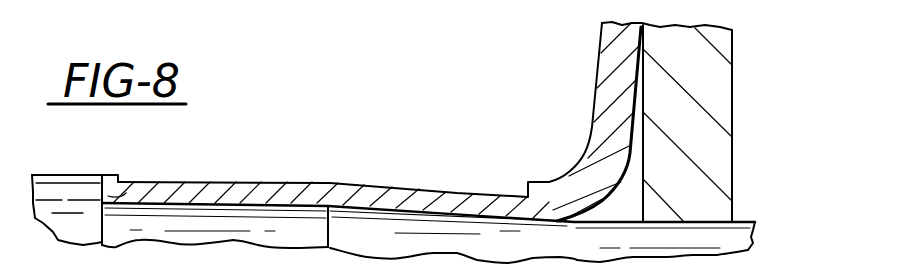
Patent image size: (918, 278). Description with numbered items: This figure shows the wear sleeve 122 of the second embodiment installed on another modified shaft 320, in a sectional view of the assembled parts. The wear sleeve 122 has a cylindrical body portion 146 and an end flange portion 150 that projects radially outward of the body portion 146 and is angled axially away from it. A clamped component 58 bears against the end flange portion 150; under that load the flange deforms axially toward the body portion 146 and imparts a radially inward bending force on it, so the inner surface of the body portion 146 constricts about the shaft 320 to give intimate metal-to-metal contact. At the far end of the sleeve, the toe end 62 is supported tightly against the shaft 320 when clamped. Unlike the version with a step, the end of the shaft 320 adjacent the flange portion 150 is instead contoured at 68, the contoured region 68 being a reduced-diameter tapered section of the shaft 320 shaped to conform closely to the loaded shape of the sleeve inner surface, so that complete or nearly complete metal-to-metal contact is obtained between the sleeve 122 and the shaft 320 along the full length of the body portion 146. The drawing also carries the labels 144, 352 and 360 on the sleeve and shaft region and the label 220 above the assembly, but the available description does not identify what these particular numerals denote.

The component 58 is at (722, 76).
The toe end 62 is at (110, 175).
The contoured region 68 is at (443, 210).
The wear sleeve 122 is at (590, 54).
The layer surface 144 is at (350, 193).
The body portion 146 is at (213, 190).
The end flange portion 150 is at (593, 108).
The spring 220 is at (266, 7).
The shaft 320 is at (742, 221).
The liner 352 is at (289, 193).
The groove 360 is at (126, 193).